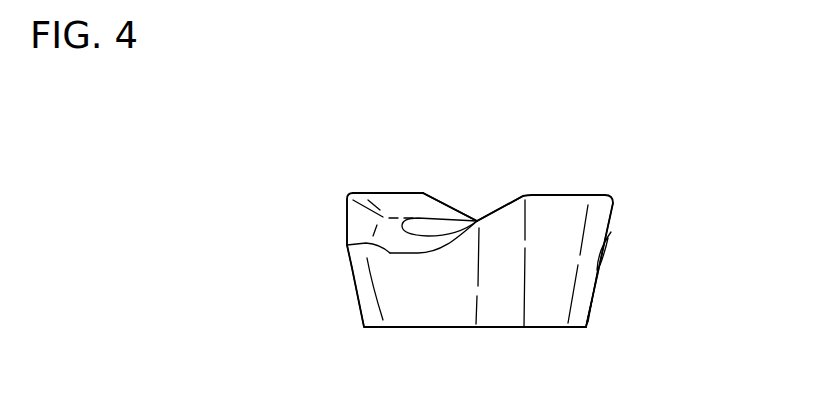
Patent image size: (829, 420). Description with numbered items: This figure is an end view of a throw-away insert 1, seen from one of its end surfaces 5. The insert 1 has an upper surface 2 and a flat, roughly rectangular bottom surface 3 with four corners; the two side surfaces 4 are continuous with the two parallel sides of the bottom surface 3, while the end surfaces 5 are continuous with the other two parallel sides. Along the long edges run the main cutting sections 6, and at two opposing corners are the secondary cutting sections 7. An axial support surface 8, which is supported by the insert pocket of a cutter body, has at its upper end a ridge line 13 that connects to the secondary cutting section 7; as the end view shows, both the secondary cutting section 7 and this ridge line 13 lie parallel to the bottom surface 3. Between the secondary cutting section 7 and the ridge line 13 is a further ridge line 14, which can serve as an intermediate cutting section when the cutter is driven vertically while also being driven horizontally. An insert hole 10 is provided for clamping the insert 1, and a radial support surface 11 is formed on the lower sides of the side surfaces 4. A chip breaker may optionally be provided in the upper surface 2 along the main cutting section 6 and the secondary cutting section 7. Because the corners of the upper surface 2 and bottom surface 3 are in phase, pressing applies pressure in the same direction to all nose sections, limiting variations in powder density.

The throw-away insert 1 is at (574, 143).
The upper surface 2 is at (408, 203).
The bottom surface 3 is at (397, 328).
The side surface 4 is at (613, 245).
The end surface 5 is at (548, 307).
The main cutting section 6 is at (342, 216).
The secondary cutting section 7 is at (380, 192).
The axial support surface 8 is at (428, 308).
The insert hole 10 is at (438, 227).
The radial support surface 11 is at (592, 300).
The ridge line 13 is at (347, 246).
The ridge line 14 is at (492, 210).